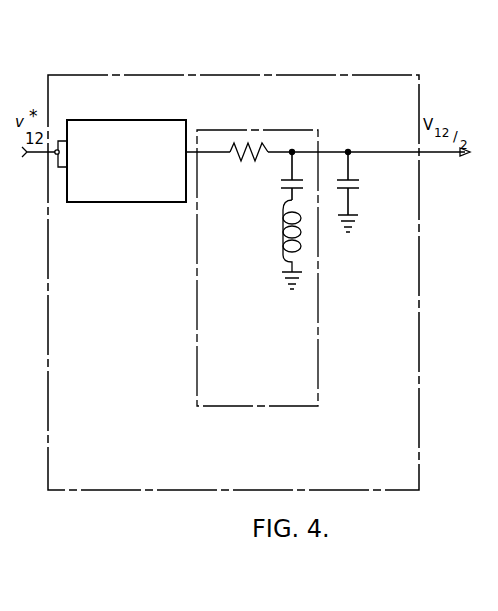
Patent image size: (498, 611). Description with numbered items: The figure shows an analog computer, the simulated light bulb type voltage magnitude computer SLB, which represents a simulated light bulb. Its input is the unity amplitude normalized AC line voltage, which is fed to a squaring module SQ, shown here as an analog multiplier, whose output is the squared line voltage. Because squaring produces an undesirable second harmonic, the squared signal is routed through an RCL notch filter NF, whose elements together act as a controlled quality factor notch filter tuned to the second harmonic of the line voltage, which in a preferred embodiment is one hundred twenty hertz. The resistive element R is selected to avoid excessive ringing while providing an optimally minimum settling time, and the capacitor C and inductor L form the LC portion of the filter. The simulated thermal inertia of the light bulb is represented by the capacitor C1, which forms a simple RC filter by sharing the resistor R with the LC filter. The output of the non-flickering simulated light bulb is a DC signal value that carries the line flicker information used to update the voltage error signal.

The simulated light bulb type voltage magnitude computer SLB is at (298, 53).
The squaring module SQ is at (129, 203).
The RCL notch filter NF is at (294, 130).
The resistive element R is at (245, 158).
The capacitor C is at (281, 182).
The inductor L is at (282, 226).
The capacitor C1 is at (360, 184).